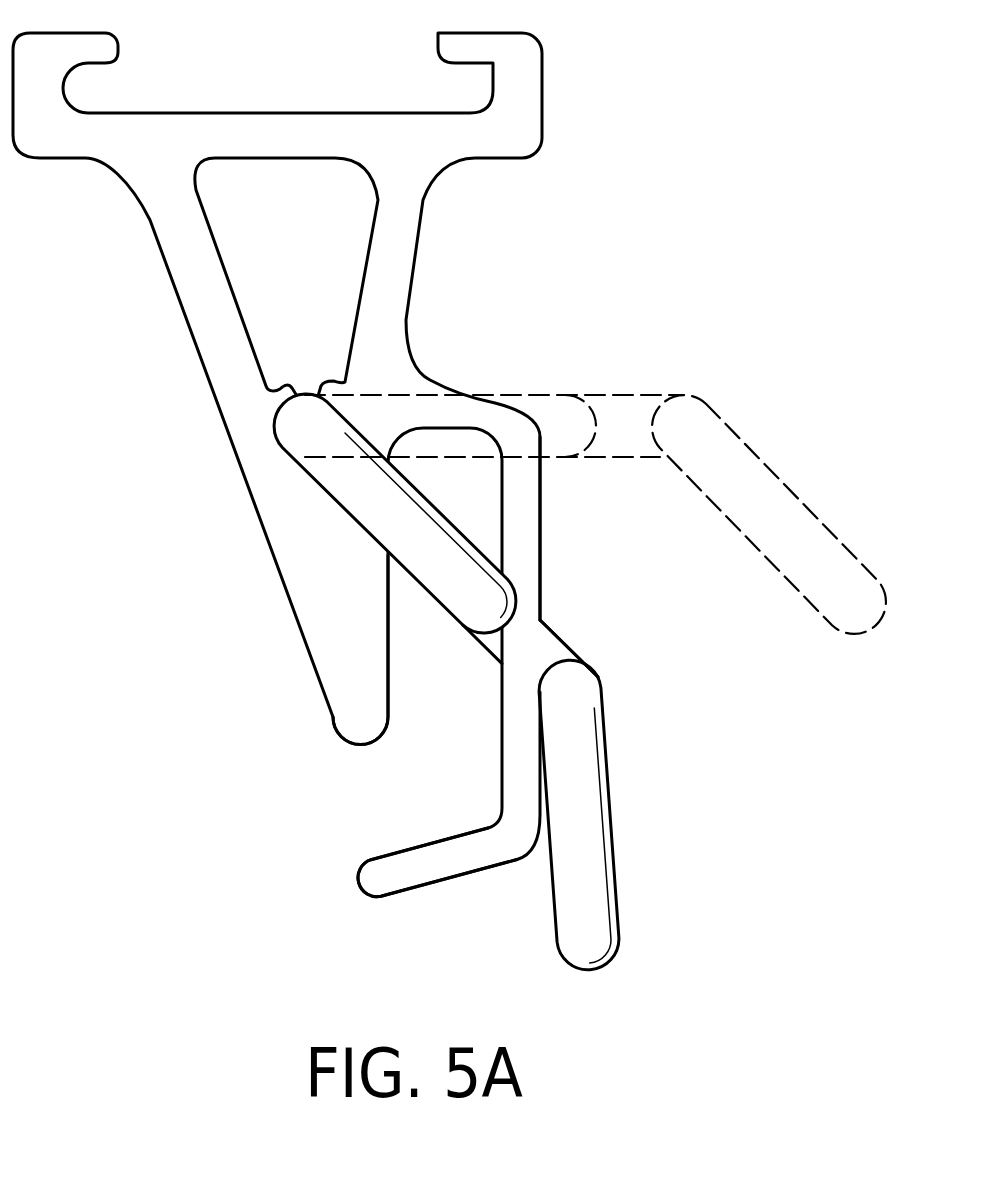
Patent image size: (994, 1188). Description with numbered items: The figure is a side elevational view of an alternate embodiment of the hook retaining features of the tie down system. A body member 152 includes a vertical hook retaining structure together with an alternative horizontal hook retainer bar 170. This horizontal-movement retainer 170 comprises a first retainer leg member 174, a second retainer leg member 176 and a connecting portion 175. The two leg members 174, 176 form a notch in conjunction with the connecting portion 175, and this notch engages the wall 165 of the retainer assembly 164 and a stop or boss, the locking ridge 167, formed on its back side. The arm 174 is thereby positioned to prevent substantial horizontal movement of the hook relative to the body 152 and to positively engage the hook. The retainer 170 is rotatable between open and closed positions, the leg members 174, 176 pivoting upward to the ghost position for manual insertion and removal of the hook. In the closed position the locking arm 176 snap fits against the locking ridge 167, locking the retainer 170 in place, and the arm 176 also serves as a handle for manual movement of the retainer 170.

The body member 152 is at (208, 336).
The retainer assembly 164 is at (483, 882).
The wall 165 is at (542, 558).
The locking ridge 167 is at (555, 652).
The horizontal hook retainer bar 170 is at (322, 501).
The first retainer leg member 174 is at (437, 567).
The connecting portion 175 is at (492, 642).
The second retainer leg member 176 is at (597, 867).